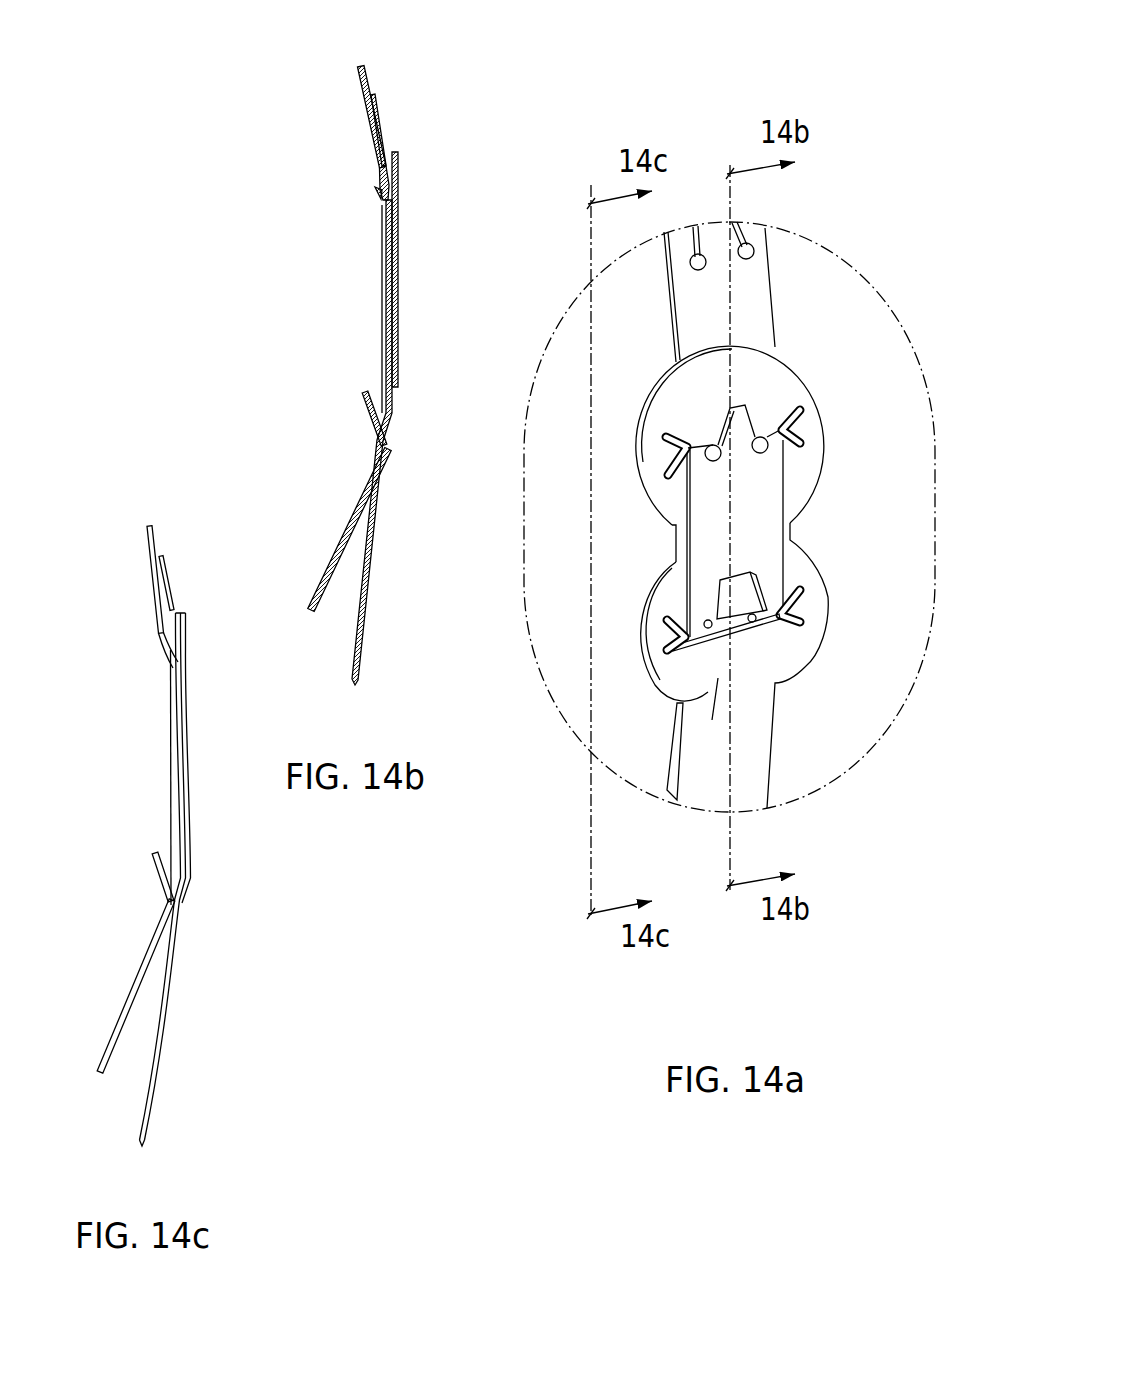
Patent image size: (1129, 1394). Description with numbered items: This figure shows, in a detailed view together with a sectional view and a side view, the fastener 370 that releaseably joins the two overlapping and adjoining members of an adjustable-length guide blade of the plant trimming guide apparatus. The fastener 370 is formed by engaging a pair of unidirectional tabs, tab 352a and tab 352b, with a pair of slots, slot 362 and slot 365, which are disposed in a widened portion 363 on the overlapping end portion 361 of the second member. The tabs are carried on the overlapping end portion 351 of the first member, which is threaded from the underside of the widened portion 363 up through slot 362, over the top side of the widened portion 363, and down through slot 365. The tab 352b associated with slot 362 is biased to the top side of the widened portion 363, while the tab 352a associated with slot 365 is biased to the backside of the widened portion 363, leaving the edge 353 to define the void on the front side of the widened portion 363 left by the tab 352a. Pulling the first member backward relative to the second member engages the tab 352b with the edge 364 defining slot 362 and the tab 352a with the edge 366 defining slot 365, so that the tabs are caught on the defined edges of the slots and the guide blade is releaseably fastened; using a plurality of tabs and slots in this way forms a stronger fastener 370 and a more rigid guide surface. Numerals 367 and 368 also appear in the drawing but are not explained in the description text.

In FIG. 14a, the overlapping end portion 351 is at (747, 523).
In FIG. 14b, the overlapping end portion 351 is at (343, 530).
In FIG. 14c, the overlapping end portion 351 is at (145, 965).
In FIG. 14b, the tab 352a is at (368, 420).
In FIG. 14c, the tab 352a is at (159, 873).
In FIG. 14a, the tab 352b is at (742, 427).
In FIG. 14b, the tab 352b is at (399, 172).
In FIG. 14c, the tab 352b is at (186, 633).
In FIG. 14a, the edge 353 is at (718, 594).
In FIG. 14a, the overlapping end portion 361 is at (718, 678).
In FIG. 14b, the overlapping end portion 361 is at (387, 516).
In FIG. 14c, the overlapping end portion 361 is at (180, 970).
In FIG. 14a, the slot 362 is at (693, 434).
In FIG. 14b, the slot 362 is at (362, 183).
In FIG. 14c, the slot 362 is at (146, 646).
In FIG. 14a, the widened portion 363 is at (666, 639).
In FIG. 14b, the edge 364 is at (388, 152).
In FIG. 14c, the edge 364 is at (175, 610).
In FIG. 14a, the slot 365 is at (770, 637).
In FIG. 14b, the slot 365 is at (407, 438).
In FIG. 14c, the slot 365 is at (198, 906).
In FIG. 14b, the edge 366 is at (380, 385).
In FIG. 14c, the edge 366 is at (170, 843).
In FIG. 14a, the hook arm 367 is at (668, 447).
In FIG. 14a, the latch tab 368 is at (763, 423).
In FIG. 14a, the fastener 370 is at (830, 524).
In FIG. 14b, the fastener 370 is at (315, 238).
In FIG. 14c, the fastener 370 is at (147, 738).